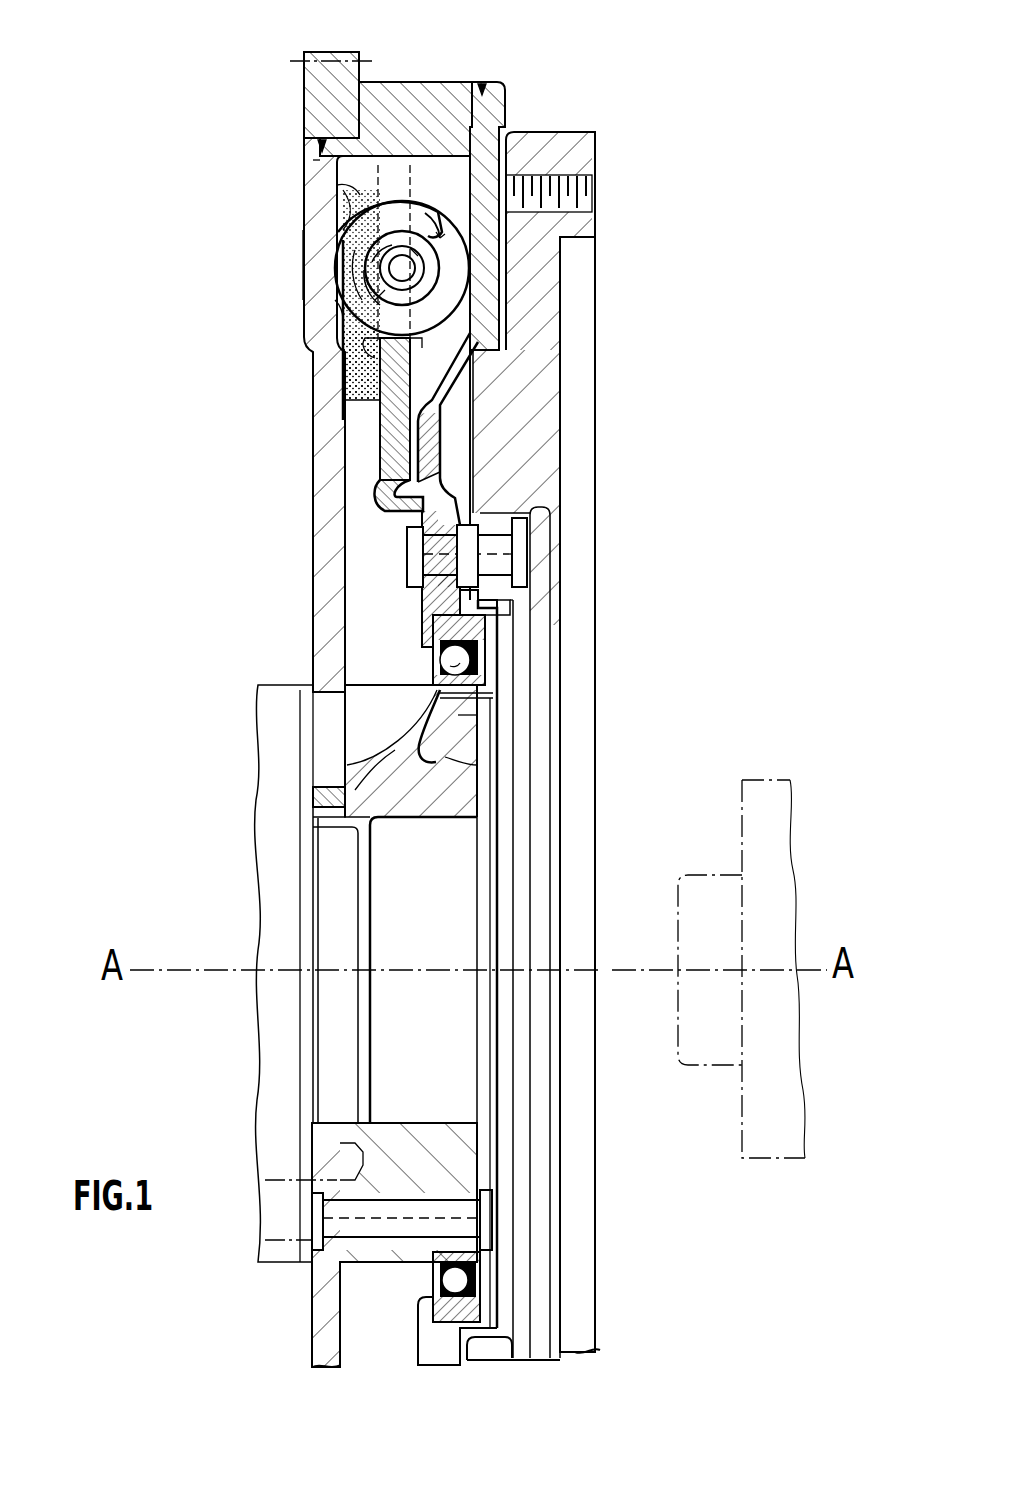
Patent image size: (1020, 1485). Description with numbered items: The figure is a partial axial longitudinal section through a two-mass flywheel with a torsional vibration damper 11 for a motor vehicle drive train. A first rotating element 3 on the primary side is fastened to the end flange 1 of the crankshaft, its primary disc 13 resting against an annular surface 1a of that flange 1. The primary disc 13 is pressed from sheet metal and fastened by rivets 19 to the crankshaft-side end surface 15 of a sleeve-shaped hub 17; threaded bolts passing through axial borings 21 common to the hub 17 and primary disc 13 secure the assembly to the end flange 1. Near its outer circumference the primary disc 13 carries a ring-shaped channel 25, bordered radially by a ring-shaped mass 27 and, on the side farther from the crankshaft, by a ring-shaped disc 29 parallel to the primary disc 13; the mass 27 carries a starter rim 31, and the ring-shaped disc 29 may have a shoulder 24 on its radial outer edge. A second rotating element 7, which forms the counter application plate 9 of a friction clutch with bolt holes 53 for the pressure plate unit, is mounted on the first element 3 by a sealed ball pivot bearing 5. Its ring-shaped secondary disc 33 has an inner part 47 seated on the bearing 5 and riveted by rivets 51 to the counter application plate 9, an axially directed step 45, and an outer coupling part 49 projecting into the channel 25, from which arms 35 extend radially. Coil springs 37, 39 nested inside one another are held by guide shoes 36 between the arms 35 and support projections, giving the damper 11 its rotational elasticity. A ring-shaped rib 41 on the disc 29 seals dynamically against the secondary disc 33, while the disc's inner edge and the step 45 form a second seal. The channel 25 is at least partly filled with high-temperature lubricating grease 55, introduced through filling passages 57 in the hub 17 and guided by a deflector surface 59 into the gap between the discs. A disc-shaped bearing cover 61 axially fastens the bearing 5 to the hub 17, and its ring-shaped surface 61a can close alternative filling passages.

The end flange 1 is at (277, 693).
The annular surface 1a is at (320, 790).
The first rotating element 3 is at (299, 266).
The pivot bearing 5 is at (505, 625).
The second rotating element 7 is at (612, 262).
The counter application plate 9 is at (562, 432).
The torsional vibration damper 11 is at (433, 205).
The primary disc 13 is at (322, 510).
The end surface 15 is at (340, 703).
The hub 17 is at (323, 817).
The rivets 19 is at (362, 1220).
The axial borings 21 is at (485, 790).
The shoulder 24 is at (502, 96).
The ring-shaped channel 25 is at (316, 163).
The ring-shaped mass 27 is at (402, 92).
The ring-shaped disc 29 is at (490, 300).
The starter rim 31 is at (325, 60).
The secondary disc 33 is at (390, 418).
The arms 35 is at (406, 170).
The guide shoes 36 is at (343, 193).
The coil spring 37 is at (360, 270).
The coil spring 39 is at (348, 336).
The ring-shaped rib 41 is at (442, 411).
The step 45 is at (390, 480).
The inner part 47 is at (420, 583).
The coupling part 49 is at (378, 381).
The rivets 51 is at (505, 555).
The bolt holes 53 is at (576, 190).
The lubricating grease 55 is at (340, 305).
The filling passages 57 is at (368, 693).
The deflector surface 59 is at (380, 770).
The bearing cover 61 is at (487, 818).
The ring-shaped surface 61a is at (492, 805).